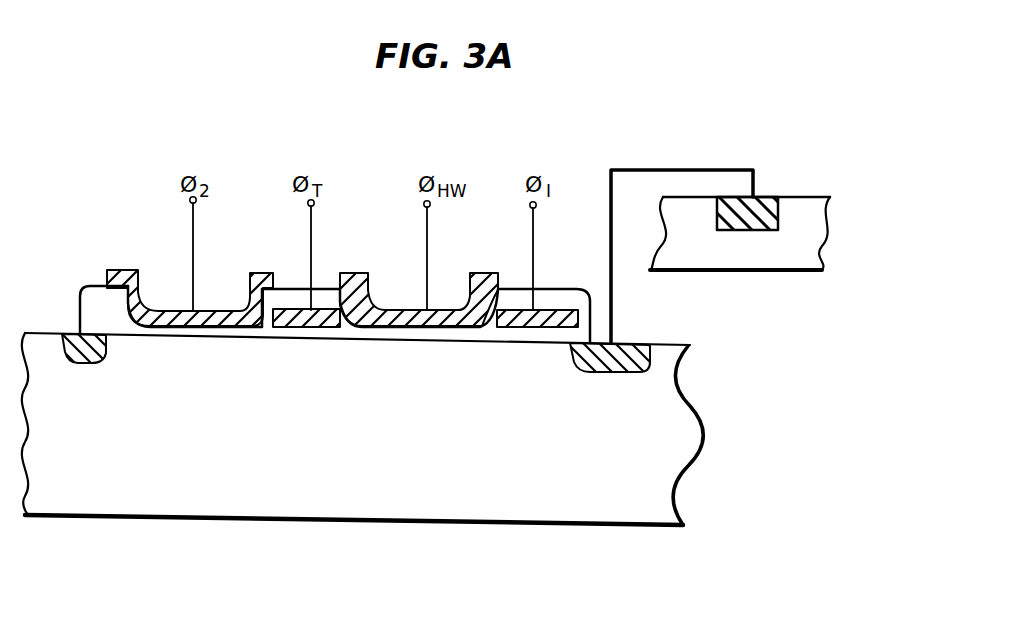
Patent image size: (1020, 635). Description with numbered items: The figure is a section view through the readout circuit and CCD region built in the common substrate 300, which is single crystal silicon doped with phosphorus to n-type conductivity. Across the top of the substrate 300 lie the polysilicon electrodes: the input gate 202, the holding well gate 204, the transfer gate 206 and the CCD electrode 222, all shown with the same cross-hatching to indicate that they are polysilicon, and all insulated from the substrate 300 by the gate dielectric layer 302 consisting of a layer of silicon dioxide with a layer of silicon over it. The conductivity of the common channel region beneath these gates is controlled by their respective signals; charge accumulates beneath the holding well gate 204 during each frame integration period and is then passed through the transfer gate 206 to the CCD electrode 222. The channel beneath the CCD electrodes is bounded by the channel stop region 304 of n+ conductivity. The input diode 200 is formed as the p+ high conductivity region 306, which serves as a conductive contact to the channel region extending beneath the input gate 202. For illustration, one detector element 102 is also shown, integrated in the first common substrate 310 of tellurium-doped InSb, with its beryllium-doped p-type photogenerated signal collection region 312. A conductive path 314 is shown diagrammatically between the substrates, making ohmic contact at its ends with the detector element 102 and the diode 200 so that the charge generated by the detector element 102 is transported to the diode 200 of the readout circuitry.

The detector element 102 is at (788, 190).
The input diode 200 is at (634, 339).
The input gate 202 is at (539, 309).
The holding well gate 204 is at (445, 309).
The transfer gate 206 is at (320, 311).
The CCD electrode 222 is at (205, 312).
The common substrate 300 is at (673, 460).
The gate dielectric layer 302 is at (97, 302).
The channel stop region 304 is at (82, 358).
The p+ high conductivity region 306 is at (594, 368).
The first common substrate 310 is at (783, 272).
The photogenerated signal collection region 312 is at (720, 231).
The conductive path 314 is at (650, 168).